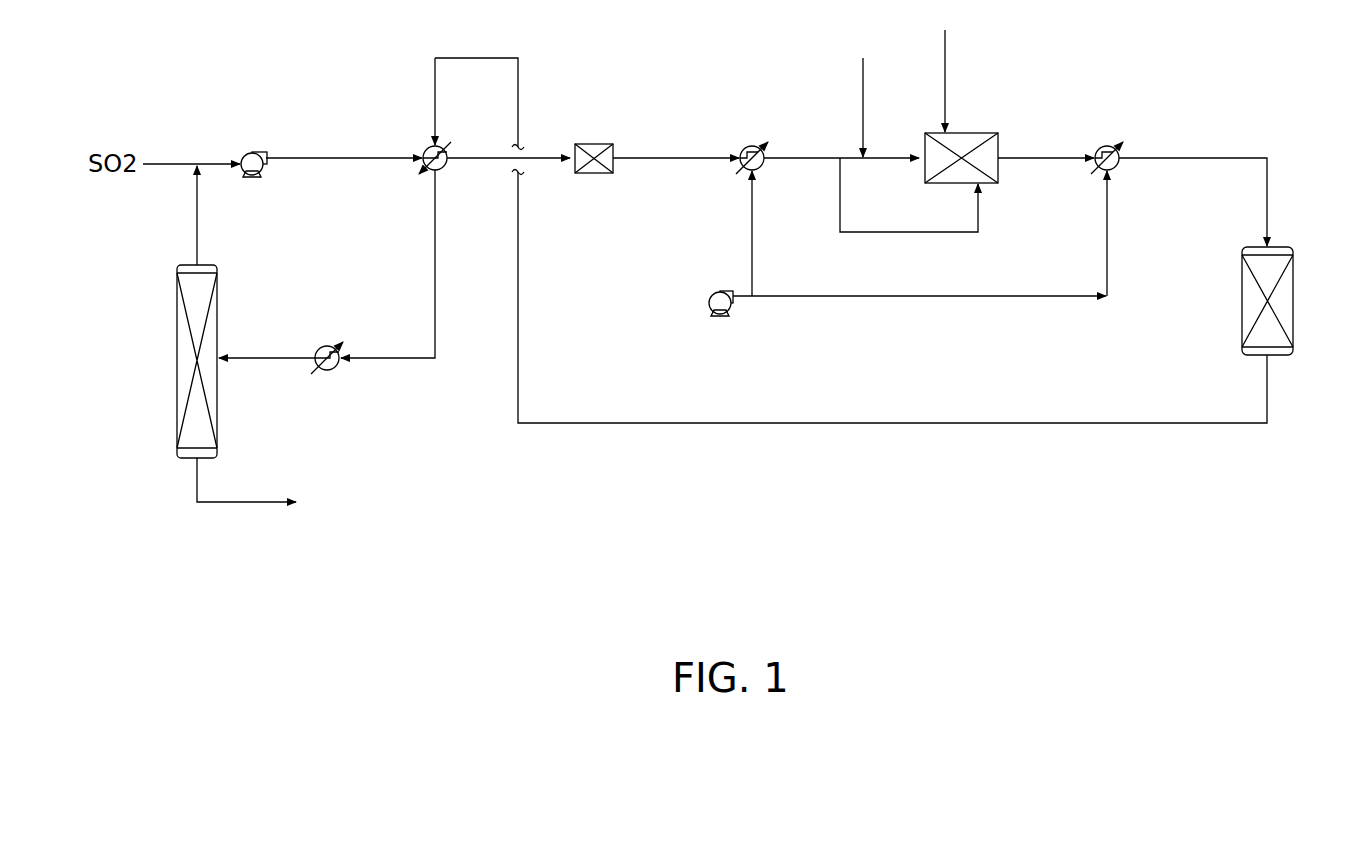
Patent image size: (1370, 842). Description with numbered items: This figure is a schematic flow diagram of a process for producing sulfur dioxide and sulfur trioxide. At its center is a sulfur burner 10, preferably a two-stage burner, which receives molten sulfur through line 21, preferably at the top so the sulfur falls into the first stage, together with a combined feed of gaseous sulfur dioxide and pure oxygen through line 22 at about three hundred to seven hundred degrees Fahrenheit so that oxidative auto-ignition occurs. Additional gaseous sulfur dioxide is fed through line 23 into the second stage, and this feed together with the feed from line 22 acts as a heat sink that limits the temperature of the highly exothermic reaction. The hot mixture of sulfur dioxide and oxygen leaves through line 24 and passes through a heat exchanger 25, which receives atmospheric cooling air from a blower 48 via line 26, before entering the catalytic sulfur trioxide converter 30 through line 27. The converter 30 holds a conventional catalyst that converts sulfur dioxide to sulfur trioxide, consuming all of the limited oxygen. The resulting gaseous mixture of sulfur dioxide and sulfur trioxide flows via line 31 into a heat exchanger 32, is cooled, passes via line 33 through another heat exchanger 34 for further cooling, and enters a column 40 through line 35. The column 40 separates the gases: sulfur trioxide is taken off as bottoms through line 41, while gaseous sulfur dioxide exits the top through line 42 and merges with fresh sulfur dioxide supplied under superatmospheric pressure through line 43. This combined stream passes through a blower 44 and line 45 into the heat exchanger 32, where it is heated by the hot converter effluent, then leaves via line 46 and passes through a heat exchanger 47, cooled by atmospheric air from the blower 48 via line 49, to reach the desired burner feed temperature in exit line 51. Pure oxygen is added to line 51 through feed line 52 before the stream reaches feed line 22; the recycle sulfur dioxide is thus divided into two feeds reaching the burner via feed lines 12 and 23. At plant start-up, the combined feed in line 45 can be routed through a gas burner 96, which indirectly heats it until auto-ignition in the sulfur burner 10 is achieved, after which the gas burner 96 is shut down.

The sulfur burner 10 is at (975, 132).
The feed line 12 is at (848, 156).
The line 21 is at (945, 62).
The line 22 is at (892, 162).
The line 23 is at (929, 233).
The line 24 is at (1037, 162).
The heat exchanger 25 is at (1118, 168).
The line 26 is at (1107, 268).
The line 27 is at (1198, 158).
The catalytic sulfur trioxide converter 30 is at (1293, 292).
The line 31 is at (1267, 397).
The heat exchanger 32 is at (440, 143).
The line 33 is at (435, 228).
The heat exchanger 34 is at (327, 345).
The line 35 is at (263, 360).
The column 40 is at (177, 339).
The line 41 is at (263, 501).
The line 42 is at (197, 210).
The line 43 is at (160, 164).
The blower 44 is at (250, 151).
The line 45 is at (340, 154).
The line 46 is at (678, 156).
The heat exchanger 47 is at (750, 145).
The blower 48 is at (712, 296).
The line 49 is at (752, 213).
The exit line 51 is at (795, 162).
The feed line 52 is at (863, 85).
The gas burner 96 is at (592, 142).